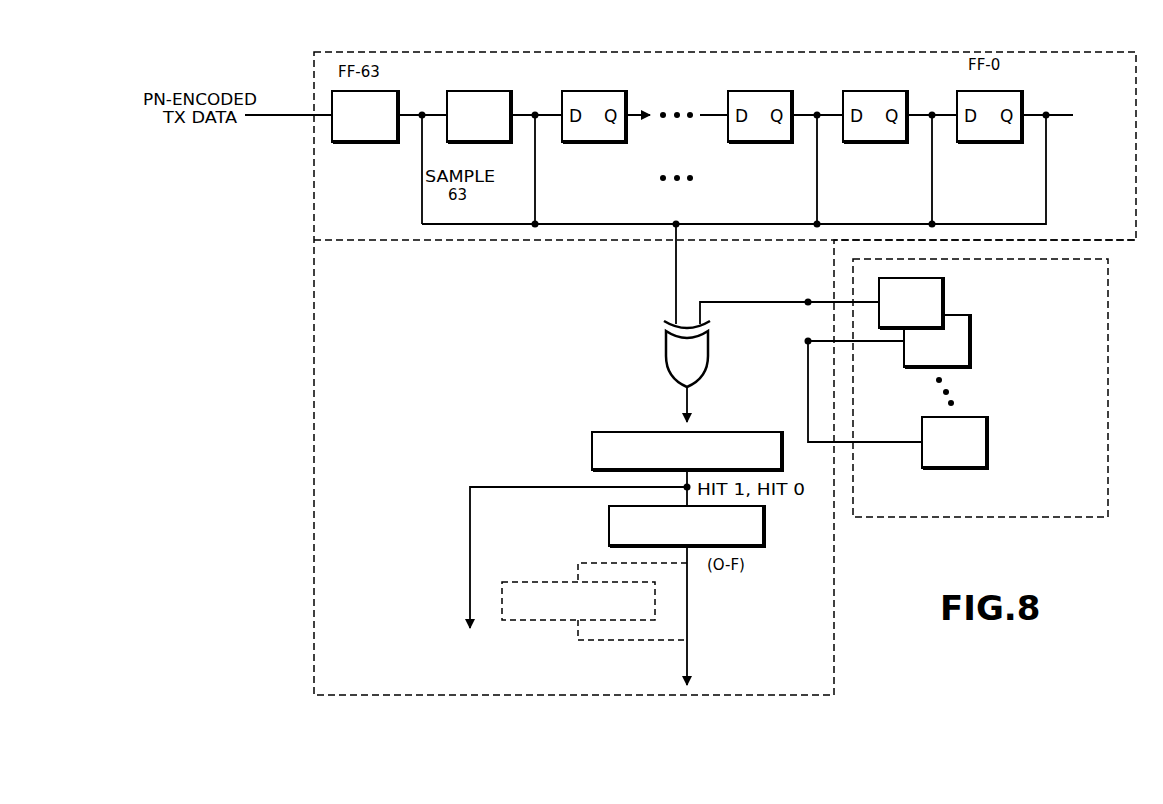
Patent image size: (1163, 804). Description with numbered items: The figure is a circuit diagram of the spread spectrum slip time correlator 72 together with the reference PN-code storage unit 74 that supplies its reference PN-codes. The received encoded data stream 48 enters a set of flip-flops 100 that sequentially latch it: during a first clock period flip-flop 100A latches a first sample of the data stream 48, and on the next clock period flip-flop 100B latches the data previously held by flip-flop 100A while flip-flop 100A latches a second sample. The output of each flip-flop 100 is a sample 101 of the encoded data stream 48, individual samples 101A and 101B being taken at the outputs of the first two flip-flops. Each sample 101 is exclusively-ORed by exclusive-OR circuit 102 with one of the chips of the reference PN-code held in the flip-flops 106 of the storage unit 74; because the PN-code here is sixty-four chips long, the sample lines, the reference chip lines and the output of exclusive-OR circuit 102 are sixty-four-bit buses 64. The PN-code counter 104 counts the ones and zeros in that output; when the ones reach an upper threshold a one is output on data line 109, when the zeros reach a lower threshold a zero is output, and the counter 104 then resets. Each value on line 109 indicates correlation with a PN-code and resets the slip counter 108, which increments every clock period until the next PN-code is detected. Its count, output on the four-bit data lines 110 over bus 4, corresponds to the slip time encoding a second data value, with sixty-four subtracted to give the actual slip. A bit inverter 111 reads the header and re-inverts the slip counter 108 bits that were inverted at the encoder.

The encoded data stream 48 is at (284, 115).
The SSST correlator 72 is at (314, 345).
The reference PN-code storage unit 74 is at (958, 410).
The set of flip-flops 100 is at (1054, 76).
The flip-flop 100A is at (363, 143).
The flip-flop 100B is at (480, 90).
The sample 101 is at (1059, 211).
The sample 63 output tap 101A is at (422, 206).
The sample output tap 101B is at (535, 205).
The exclusive-OR circuit 102 is at (666, 350).
The PN-code counter 104 is at (592, 452).
The flip-flops 106 is at (1011, 474).
The slip counter 108 is at (609, 530).
The data line 109 is at (470, 565).
The data lines 110 is at (687, 657).
The bit inverter 111 is at (530, 582).
The sixty-four-bit bus 64 is at (667, 292).
The four-bit bus 4 is at (674, 609).